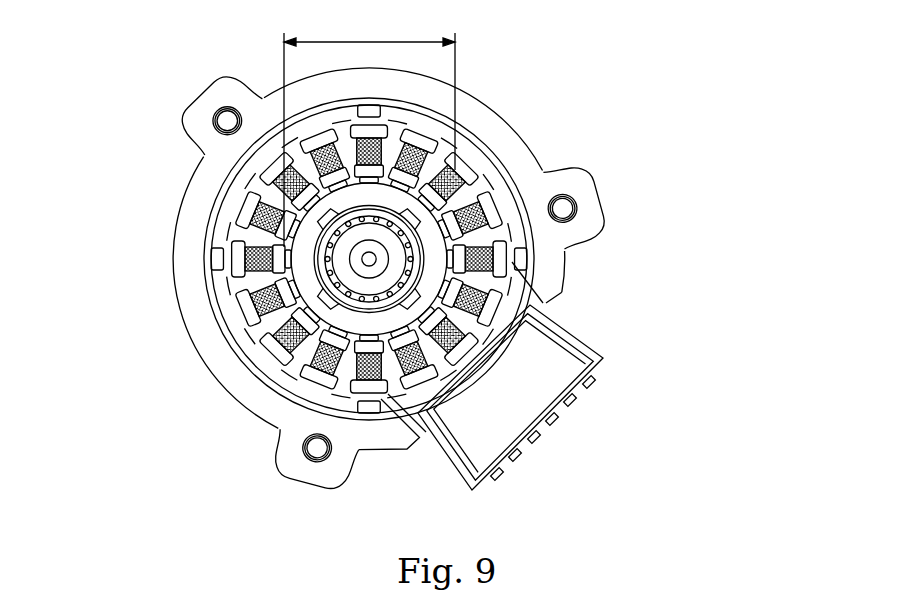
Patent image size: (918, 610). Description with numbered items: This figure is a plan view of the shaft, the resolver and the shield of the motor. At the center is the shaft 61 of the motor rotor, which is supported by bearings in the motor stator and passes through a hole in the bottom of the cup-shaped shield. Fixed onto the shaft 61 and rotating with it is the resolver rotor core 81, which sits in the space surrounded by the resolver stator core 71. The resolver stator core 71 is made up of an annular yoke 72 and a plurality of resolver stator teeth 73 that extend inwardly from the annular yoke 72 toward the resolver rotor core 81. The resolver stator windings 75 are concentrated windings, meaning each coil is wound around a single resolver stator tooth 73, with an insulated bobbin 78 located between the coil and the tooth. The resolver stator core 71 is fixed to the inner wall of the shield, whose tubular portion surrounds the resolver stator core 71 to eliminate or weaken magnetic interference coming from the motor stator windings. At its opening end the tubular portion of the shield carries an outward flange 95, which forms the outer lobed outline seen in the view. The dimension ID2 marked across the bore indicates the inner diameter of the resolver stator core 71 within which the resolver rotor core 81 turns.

The shaft 61 is at (280, 373).
The resolver stator core 71 is at (92, 244).
The annular yoke 72 is at (245, 236).
The resolver stator teeth 73 is at (306, 290).
The resolver stator windings 75 is at (280, 213).
The insulated bobbin 78 is at (277, 160).
The resolver rotor core 81 is at (283, 330).
The outward flange 95 is at (205, 329).
The inner diameter of stator ID2 is at (369, 128).